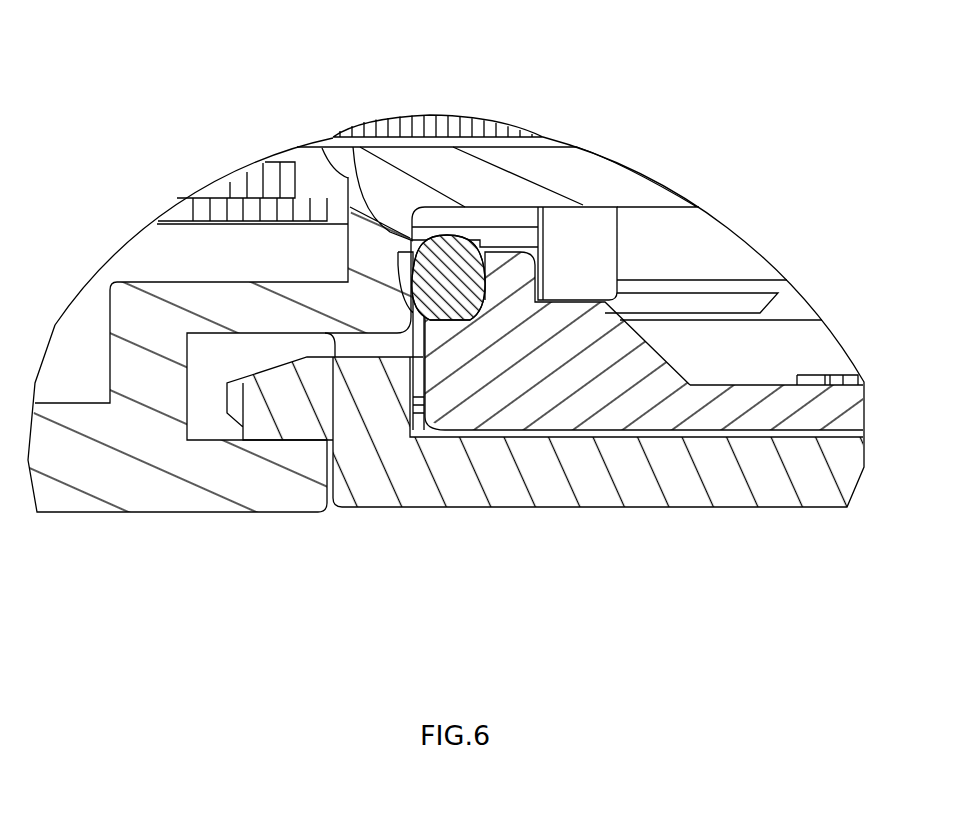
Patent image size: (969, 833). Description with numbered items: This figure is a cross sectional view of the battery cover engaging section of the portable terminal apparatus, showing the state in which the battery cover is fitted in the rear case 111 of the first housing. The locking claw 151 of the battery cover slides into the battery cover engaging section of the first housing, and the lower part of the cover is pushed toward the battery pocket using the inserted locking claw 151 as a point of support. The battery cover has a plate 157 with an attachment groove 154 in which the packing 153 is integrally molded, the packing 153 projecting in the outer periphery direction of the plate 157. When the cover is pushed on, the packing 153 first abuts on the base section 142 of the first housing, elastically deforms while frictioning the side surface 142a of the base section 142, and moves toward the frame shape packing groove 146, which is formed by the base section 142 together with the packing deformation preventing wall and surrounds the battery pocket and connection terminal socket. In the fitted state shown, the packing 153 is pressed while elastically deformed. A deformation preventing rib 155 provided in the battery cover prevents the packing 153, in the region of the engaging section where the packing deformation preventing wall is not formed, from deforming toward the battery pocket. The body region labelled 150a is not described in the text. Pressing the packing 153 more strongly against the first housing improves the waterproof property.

The rear case 111 is at (127, 477).
The base section 142 is at (298, 348).
The side surface 142a is at (353, 147).
The frame shape packing groove 146 is at (480, 213).
The base body 150a is at (672, 480).
The locking claw 151 is at (267, 417).
The packing 153 is at (418, 430).
The attachment groove 154 is at (462, 298).
The deformation preventing rib 155 is at (648, 348).
The plate 157 is at (767, 417).